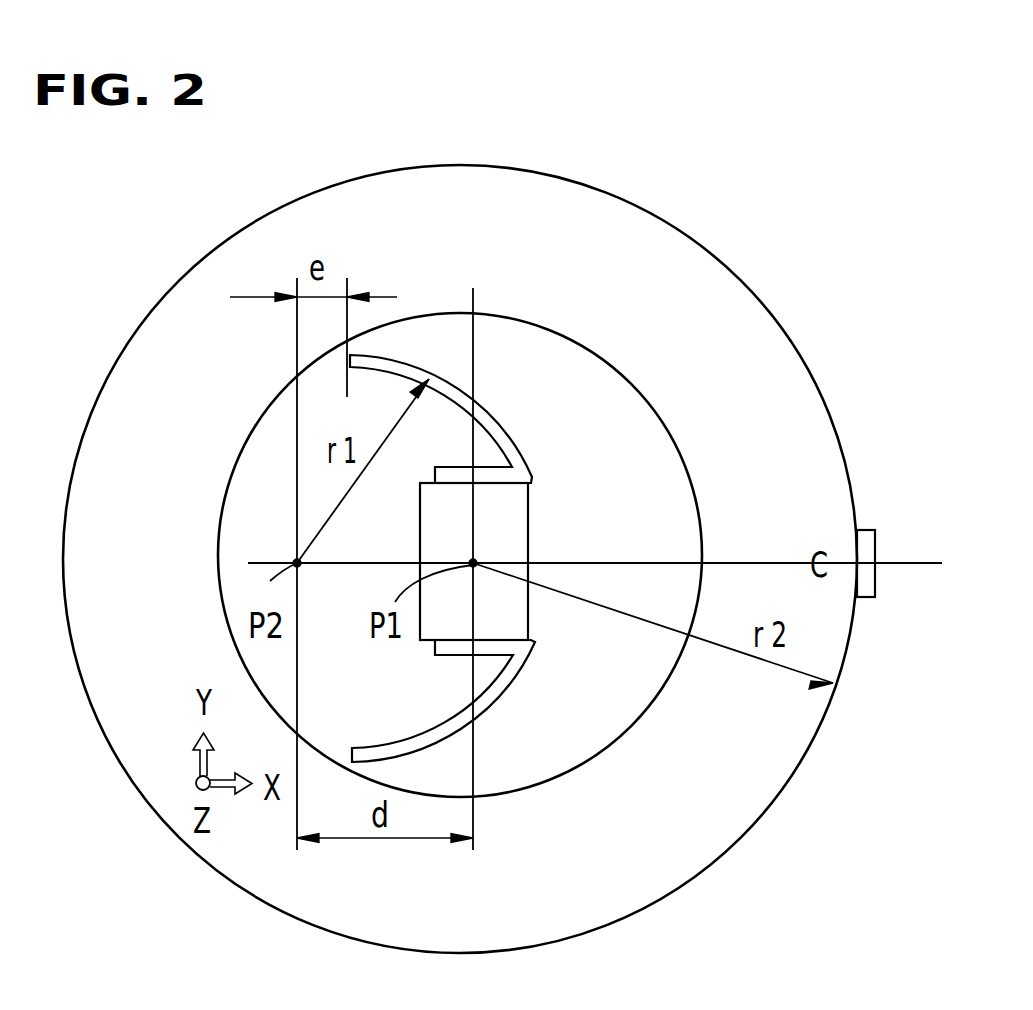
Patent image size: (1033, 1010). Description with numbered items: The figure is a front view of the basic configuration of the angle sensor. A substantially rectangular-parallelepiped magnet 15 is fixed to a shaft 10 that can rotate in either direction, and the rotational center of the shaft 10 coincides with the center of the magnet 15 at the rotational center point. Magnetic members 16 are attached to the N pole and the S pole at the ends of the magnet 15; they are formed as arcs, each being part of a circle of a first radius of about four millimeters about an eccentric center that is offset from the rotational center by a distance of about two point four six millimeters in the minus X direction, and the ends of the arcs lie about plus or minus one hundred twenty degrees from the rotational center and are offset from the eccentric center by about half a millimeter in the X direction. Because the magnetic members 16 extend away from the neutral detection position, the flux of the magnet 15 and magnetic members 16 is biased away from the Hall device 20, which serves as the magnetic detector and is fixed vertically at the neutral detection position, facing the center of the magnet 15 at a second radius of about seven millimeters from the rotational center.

The shaft 10 is at (573, 337).
The magnet 15 is at (530, 526).
The magnetic members 16 is at (507, 430).
The Hall device 20 is at (875, 543).